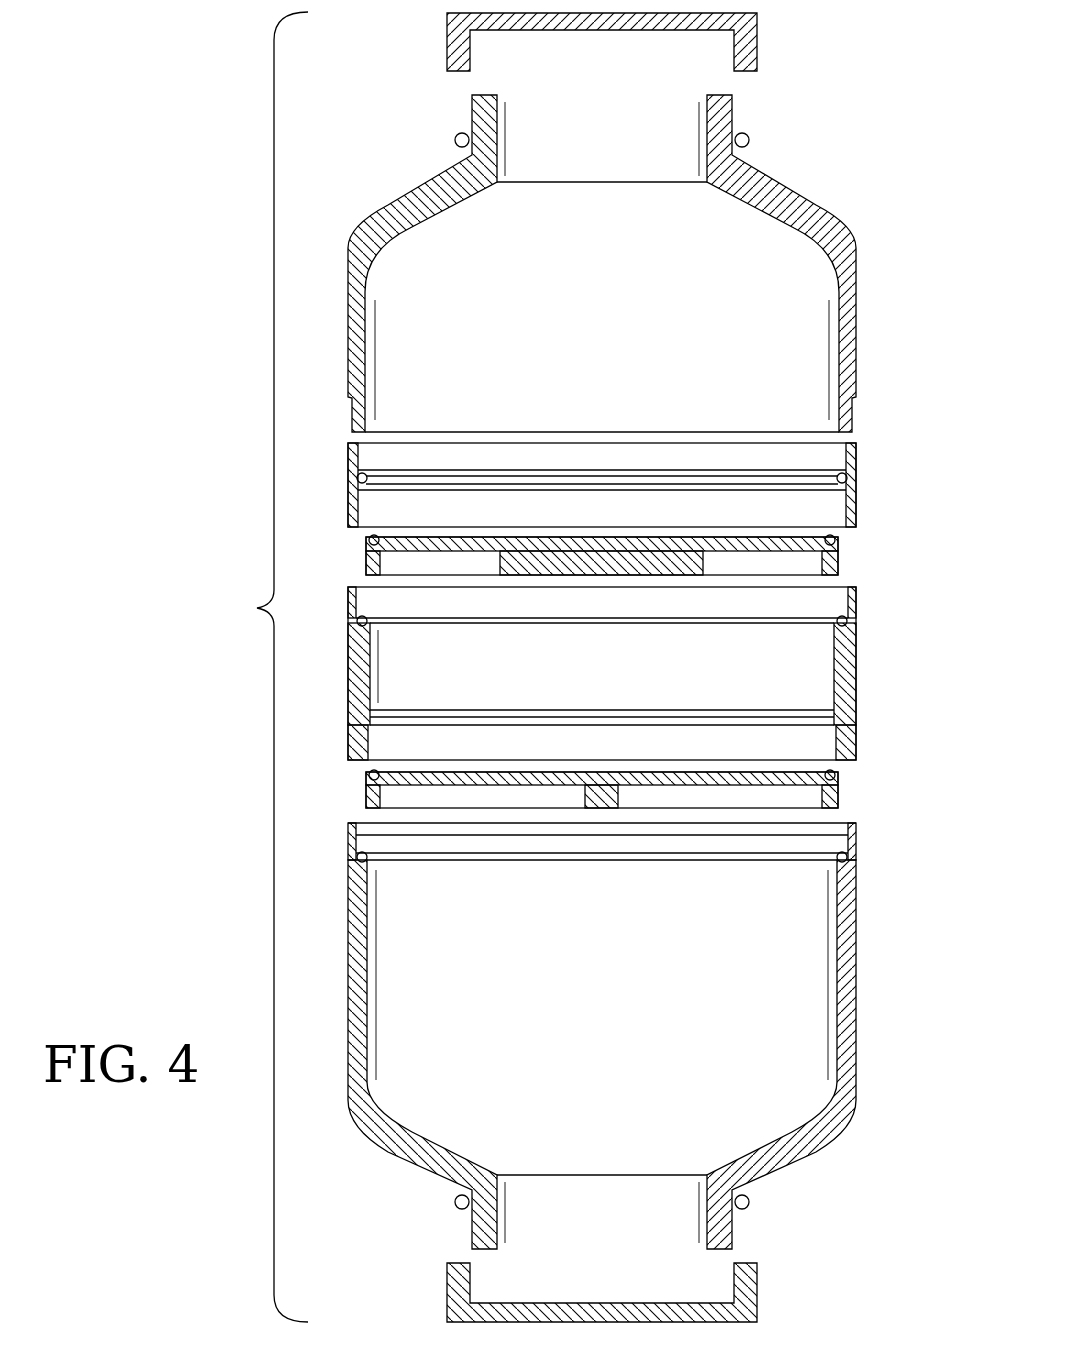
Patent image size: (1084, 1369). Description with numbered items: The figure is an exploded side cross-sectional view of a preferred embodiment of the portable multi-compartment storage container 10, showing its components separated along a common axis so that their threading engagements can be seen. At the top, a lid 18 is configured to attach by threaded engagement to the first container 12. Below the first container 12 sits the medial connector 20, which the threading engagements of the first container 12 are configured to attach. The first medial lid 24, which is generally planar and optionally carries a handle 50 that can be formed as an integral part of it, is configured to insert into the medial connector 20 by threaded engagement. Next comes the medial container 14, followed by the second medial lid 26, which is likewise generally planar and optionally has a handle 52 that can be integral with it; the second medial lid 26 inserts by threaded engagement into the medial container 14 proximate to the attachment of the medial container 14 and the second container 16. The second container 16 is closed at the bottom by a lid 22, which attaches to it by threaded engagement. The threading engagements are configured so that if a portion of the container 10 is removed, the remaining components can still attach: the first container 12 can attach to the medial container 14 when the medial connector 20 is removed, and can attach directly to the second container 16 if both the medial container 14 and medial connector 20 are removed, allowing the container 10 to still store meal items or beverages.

The portable multi-compartment storage container 10 is at (250, 667).
The first container 12 is at (855, 233).
The medial container 14 is at (856, 652).
The second container 16 is at (856, 960).
The lid 18 is at (757, 35).
The medial connector 20 is at (855, 467).
The lid 22 is at (757, 1292).
The first medial lid 24 is at (658, 562).
The second medial lid 26 is at (664, 846).
The handle 50 is at (685, 565).
The handle 52 is at (617, 795).